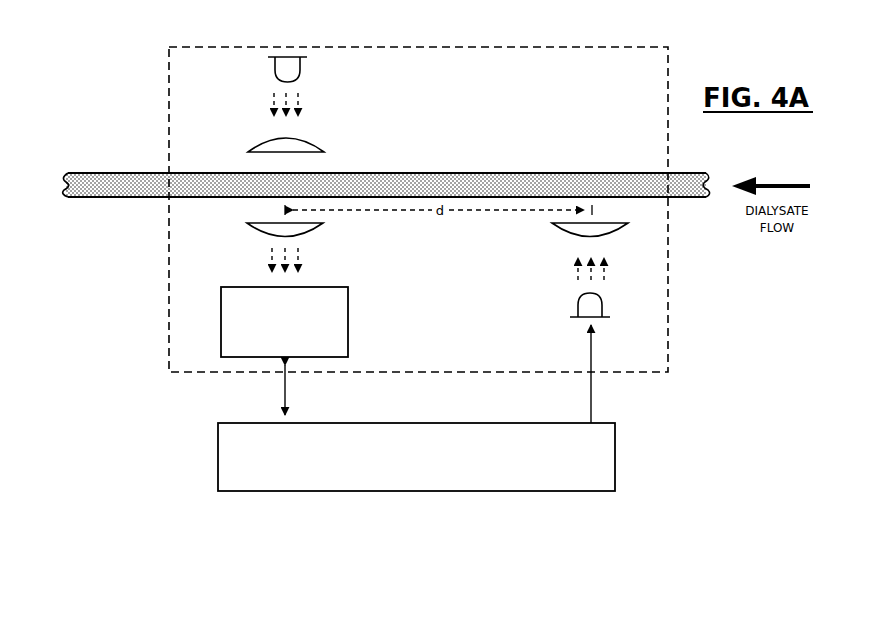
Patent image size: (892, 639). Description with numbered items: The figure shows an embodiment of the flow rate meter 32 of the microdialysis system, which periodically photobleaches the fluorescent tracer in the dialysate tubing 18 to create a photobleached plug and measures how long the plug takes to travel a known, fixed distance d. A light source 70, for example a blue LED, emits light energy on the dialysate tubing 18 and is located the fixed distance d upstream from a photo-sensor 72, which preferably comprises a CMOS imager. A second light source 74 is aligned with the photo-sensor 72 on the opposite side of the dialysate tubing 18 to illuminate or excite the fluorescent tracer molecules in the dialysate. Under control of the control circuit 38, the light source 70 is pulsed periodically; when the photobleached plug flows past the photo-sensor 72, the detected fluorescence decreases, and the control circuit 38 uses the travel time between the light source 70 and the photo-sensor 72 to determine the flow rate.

The dialysate tubing 18 is at (376, 223).
The flow rate meter 32 is at (418, 191).
The control circuit 38 is at (472, 412).
The light source 70 is at (633, 293).
The photo-sensor 72 is at (219, 292).
The second light source 74 is at (234, 86).